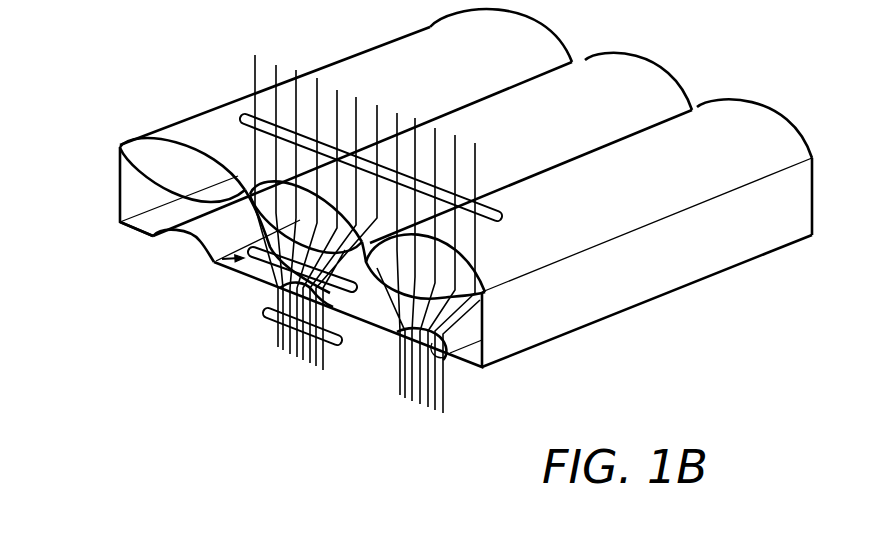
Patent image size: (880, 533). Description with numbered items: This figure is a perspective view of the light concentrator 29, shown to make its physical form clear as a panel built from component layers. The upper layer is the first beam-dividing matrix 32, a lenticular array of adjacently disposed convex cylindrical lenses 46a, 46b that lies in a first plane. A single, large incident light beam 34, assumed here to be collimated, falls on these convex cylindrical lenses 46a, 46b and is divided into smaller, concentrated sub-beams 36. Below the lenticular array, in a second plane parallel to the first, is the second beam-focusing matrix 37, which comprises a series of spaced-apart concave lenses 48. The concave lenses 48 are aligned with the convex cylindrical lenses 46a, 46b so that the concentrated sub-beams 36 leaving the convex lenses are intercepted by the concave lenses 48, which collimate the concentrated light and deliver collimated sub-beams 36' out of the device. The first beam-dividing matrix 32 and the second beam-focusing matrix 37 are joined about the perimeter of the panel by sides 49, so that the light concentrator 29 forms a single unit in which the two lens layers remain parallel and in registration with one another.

The light concentrator 29 is at (55, 117).
The first beam-dividing matrix 32 is at (748, 122).
The light beam 34 is at (248, 118).
The sub-beams 36 is at (270, 285).
The collimated sub-beams 36' is at (320, 344).
The second beam-focusing matrix 37 is at (212, 262).
The convex cylindrical lens 46a is at (432, 30).
The convex cylindrical lens 46b is at (628, 73).
The concave lenses 48 is at (281, 298).
The sides 49 is at (697, 263).